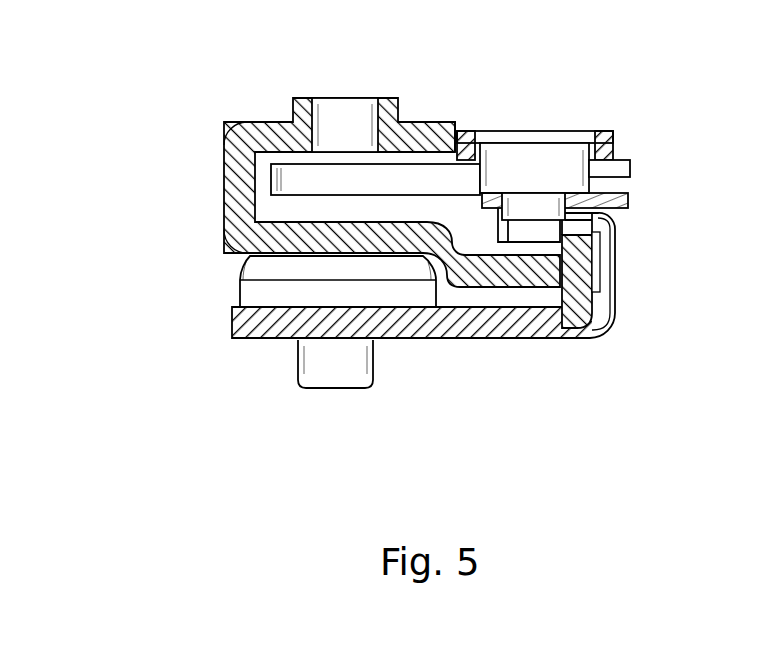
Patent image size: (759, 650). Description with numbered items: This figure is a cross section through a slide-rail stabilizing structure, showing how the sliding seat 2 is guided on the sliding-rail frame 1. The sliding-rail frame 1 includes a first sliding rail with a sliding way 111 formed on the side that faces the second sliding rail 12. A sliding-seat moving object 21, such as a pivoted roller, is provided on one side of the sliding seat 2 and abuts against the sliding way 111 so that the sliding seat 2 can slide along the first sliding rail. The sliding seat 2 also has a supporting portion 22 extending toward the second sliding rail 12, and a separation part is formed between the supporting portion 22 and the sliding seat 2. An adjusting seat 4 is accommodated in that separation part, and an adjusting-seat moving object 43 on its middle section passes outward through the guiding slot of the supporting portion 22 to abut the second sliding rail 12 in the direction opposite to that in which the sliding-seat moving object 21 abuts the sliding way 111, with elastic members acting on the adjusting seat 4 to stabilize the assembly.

The sliding-rail frame 1 is at (237, 158).
The second sliding rail 12 is at (458, 123).
The supporting portion 22 is at (342, 178).
The adjusting-seat moving object 43 is at (613, 141).
The adjusting seat 4 is at (620, 208).
The sliding seat 2 is at (495, 333).
The sliding-seat moving object 21 is at (240, 295).
The sliding way 111 is at (433, 280).